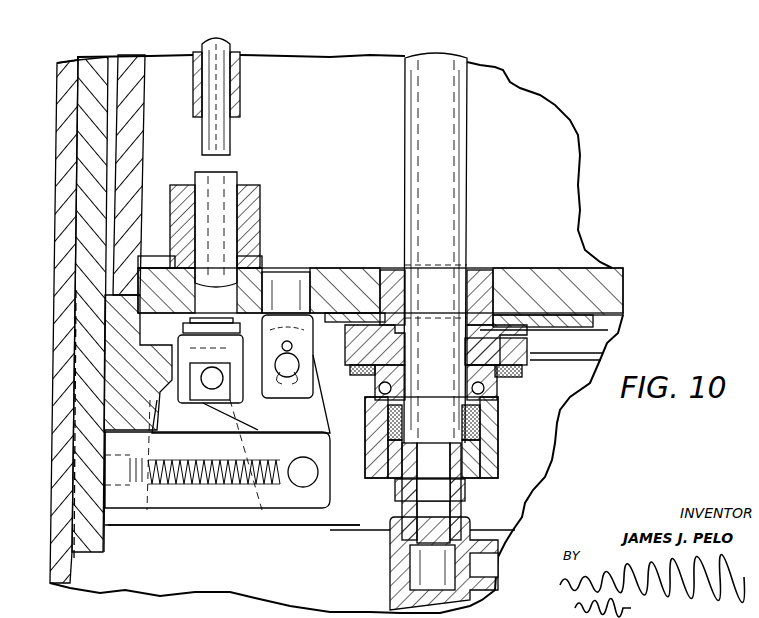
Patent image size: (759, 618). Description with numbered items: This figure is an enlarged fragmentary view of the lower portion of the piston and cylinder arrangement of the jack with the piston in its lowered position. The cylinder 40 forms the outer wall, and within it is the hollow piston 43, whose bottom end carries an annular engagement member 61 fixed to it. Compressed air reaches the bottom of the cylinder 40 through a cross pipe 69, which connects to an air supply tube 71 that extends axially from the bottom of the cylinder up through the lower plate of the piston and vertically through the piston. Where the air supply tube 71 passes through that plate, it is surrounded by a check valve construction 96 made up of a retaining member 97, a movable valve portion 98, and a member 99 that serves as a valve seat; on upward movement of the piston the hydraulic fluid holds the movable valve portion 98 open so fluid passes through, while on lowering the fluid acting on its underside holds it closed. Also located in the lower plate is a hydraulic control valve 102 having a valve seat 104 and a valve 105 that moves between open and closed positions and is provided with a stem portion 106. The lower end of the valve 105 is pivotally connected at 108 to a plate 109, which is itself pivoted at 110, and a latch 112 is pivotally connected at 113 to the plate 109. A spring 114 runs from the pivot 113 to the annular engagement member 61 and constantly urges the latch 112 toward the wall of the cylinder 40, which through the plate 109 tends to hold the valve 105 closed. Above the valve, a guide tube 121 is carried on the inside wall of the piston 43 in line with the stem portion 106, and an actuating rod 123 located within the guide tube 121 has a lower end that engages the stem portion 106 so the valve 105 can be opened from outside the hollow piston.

The cylinder 40 is at (75, 60).
The piston 43 is at (136, 57).
The annular engagement member 61 is at (130, 525).
The cross pipe 69 is at (500, 575).
The air supply tube 71 is at (466, 190).
The check valve construction 96 is at (510, 254).
The retaining member 97 is at (525, 365).
The movable valve portion 98 is at (500, 337).
The valve seat member 99 is at (395, 270).
The hydraulic control valve 102 is at (291, 246).
The valve seat 104 is at (178, 262).
The valve 105 is at (183, 328).
The stem portion 106 is at (240, 172).
The pivotal connection 108 is at (212, 385).
The plate 109 is at (315, 412).
The pivot 110 is at (300, 372).
The latch 112 is at (220, 500).
The pivot 113 is at (312, 478).
The spring 114 is at (266, 512).
The guide tube 121 is at (242, 100).
The actuating rod 123 is at (232, 130).